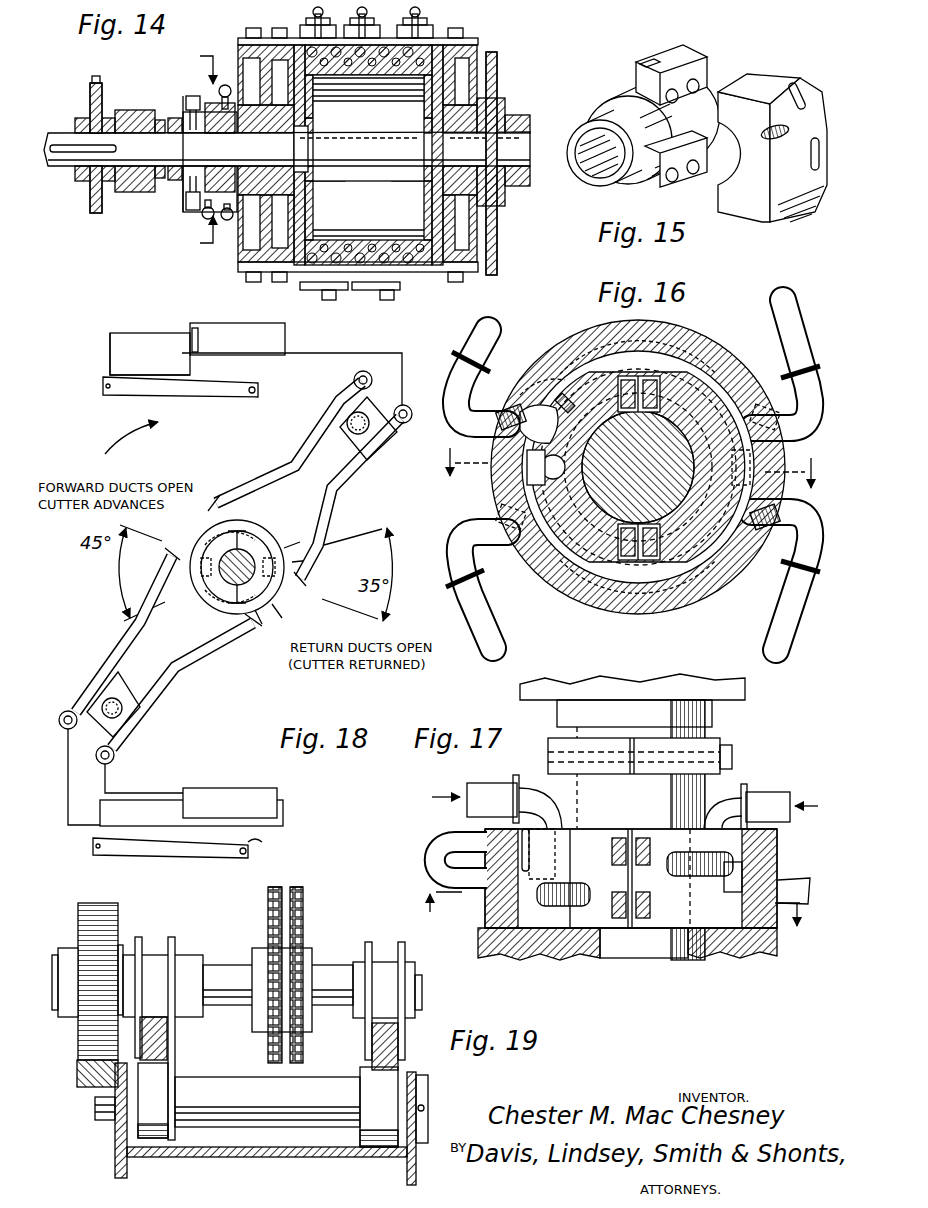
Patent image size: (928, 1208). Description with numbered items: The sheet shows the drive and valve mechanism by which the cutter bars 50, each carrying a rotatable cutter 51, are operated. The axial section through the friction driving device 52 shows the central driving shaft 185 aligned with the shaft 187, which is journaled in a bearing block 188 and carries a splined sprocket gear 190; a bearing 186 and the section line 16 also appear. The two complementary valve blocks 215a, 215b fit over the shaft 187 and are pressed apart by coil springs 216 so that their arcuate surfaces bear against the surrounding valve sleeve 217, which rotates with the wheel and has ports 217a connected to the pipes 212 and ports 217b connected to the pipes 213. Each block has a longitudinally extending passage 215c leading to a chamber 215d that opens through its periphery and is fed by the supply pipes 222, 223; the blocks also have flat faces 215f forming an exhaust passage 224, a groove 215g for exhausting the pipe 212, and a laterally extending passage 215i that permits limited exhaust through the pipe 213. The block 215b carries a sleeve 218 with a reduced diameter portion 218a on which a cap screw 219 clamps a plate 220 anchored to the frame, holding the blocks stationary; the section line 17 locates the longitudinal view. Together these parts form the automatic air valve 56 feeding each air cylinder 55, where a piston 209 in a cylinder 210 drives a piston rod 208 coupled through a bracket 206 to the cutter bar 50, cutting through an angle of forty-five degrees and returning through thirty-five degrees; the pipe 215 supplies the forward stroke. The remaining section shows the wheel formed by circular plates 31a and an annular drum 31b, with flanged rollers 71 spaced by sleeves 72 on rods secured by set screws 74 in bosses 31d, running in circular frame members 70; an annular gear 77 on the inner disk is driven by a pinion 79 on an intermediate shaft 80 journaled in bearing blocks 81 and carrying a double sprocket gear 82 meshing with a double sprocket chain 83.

In FIG. 14, the section line 16— 16 is at (199, 149).
In FIG. 17, the section line 16— 16 is at (611, 917).
In FIG. 16, the section line 17— 17 is at (621, 483).
In FIG. 14, the circular plate 31a is at (497, 68).
In FIG. 19, the circular plate 31a is at (115, 1172).
In FIG. 19, the annular drum 31b is at (200, 1157).
In FIG. 19, the boss 31d is at (428, 1088).
In FIG. 18, the cutter bar 50 is at (190, 396).
In FIG. 18, the rotatable cutter 51 is at (254, 396).
In FIG. 14, the friction driving device 52 is at (488, 38).
In FIG. 18, the air cylinder 55 is at (285, 334).
In FIG. 14, the automatic air valve 56 is at (184, 226).
In FIG. 18, the automatic air valve 56 is at (258, 544).
In FIG. 19, the circular frame member 70 is at (166, 1034).
In FIG. 19, the flanged roller 71 is at (158, 1140).
In FIG. 19, the sleeve 72 is at (232, 1077).
In FIG. 19, the set screw 74 is at (426, 1108).
In FIG. 19, the annular gear 77 is at (80, 1076).
In FIG. 19, the pinion 79 is at (88, 908).
In FIG. 19, the intermediate shaft 80 is at (222, 976).
In FIG. 19, the bearing block 81 is at (182, 958).
In FIG. 19, the double sprocket gear 82 is at (296, 948).
In FIG. 19, the double sprocket chain 83 is at (294, 898).
In FIG. 14, the central driving shaft 185 is at (516, 152).
In FIG. 14, the bearing 186 is at (502, 114).
In FIG. 14, the shaft 187 is at (145, 152).
In FIG. 16, the shaft 187 is at (660, 500).
In FIG. 18, the shaft 187 is at (240, 548).
In FIG. 17, the shaft 187 is at (630, 958).
In FIG. 14, the bearing block 188 is at (126, 110).
In FIG. 17, the bearing block 188 is at (693, 690).
In FIG. 14, the sprocket gear 190 is at (90, 194).
In FIG. 18, the bracket 206 is at (110, 350).
In FIG. 18, the piston rod 208 is at (134, 333).
In FIG. 18, the piston 209 is at (197, 330).
In FIG. 18, the cylinder 210 is at (222, 790).
In FIG. 14, the pipe 212 is at (226, 85).
In FIG. 16, the pipe 212 is at (492, 340).
In FIG. 18, the pipe 212 is at (300, 450).
In FIG. 17, the pipe 212 is at (778, 906).
In FIG. 14, the pipe 213 is at (222, 218).
In FIG. 16, the pipe 213 is at (788, 300).
In FIG. 18, the pipe 213 is at (336, 482).
In FIG. 17, the pipe 213 is at (440, 858).
In FIG. 14, the pipe 215 is at (190, 125).
In FIG. 16, the pipe 215 is at (638, 467).
In FIG. 17, the pipe 215 is at (631, 878).
In FIG. 15, the valve block 215a is at (735, 216).
In FIG. 16, the valve block 215a is at (590, 562).
In FIG. 18, the valve block 215a is at (216, 588).
In FIG. 15, the valve block 215b is at (690, 55).
In FIG. 16, the valve block 215b is at (672, 584).
In FIG. 18, the valve block 215b is at (238, 600).
In FIG. 15, the longitudinally extending passage 215c is at (648, 60).
In FIG. 16, the longitudinally extending passage 215c is at (544, 472).
In FIG. 17, the longitudinally extending passage 215c is at (680, 852).
In FIG. 15, the chamber 215d is at (816, 136).
In FIG. 16, the chamber 215d is at (536, 462).
In FIG. 18, the chamber 215d is at (278, 567).
In FIG. 17, the chamber 215d is at (546, 906).
In FIG. 16, the flat face 215f is at (616, 375).
In FIG. 15, the groove 215g is at (782, 82).
In FIG. 16, the groove 215g is at (576, 404).
In FIG. 17, the groove 215g is at (590, 906).
In FIG. 15, the laterally extending passage 215i is at (760, 100).
In FIG. 16, the laterally extending passage 215i is at (533, 392).
In FIG. 17, the laterally extending passage 215i is at (524, 846).
In FIG. 16, the coil spring 216 is at (660, 392).
In FIG. 17, the coil spring 216 is at (612, 886).
In FIG. 14, the valve sleeve 217 is at (210, 105).
In FIG. 16, the valve sleeve 217 is at (702, 374).
In FIG. 18, the valve sleeve 217 is at (272, 548).
In FIG. 17, the valve sleeve 217 is at (490, 906).
In FIG. 16, the port 217a is at (512, 420).
In FIG. 18, the port 217a is at (262, 606).
In FIG. 16, the port 217b is at (770, 440).
In FIG. 18, the port 217b is at (284, 583).
In FIG. 15, the sleeve 218 is at (640, 98).
In FIG. 15, the reduced diameter portion 218a is at (608, 118).
In FIG. 17, the cap screw 219 is at (732, 756).
In FIG. 14, the plate 220 is at (178, 192).
In FIG. 17, the plate 220 is at (714, 754).
In FIG. 14, the supply pipe 222 is at (192, 206).
In FIG. 17, the supply pipe 222 is at (493, 793).
In FIG. 14, the supply pipe 223 is at (190, 98).
In FIG. 17, the supply pipe 223 is at (758, 806).
In FIG. 16, the exhaust passage 224 is at (642, 360).